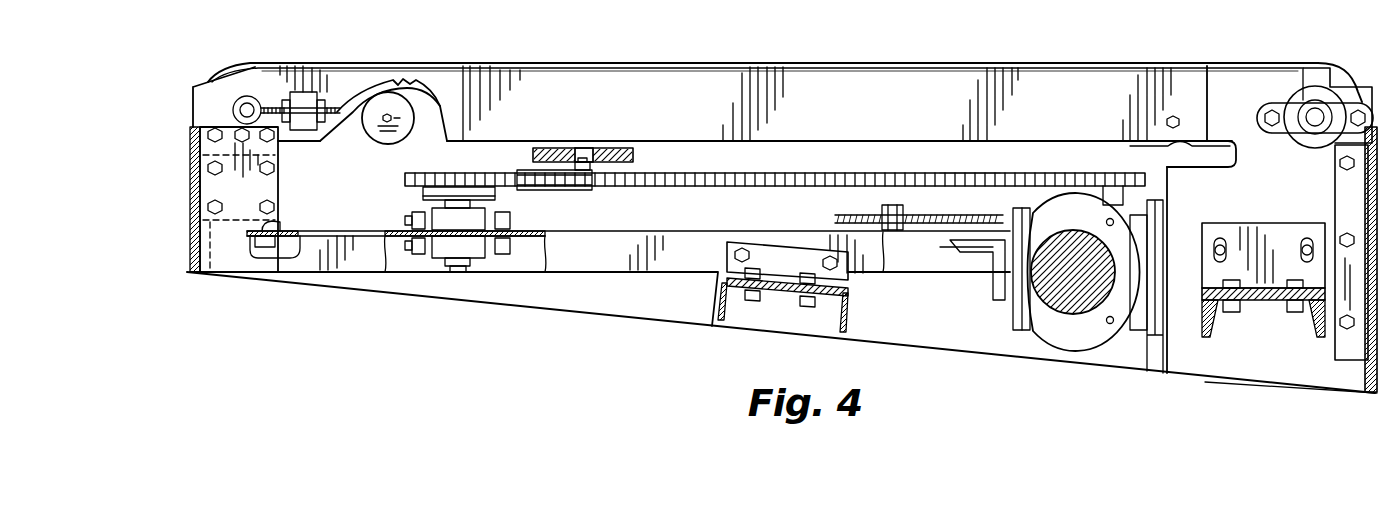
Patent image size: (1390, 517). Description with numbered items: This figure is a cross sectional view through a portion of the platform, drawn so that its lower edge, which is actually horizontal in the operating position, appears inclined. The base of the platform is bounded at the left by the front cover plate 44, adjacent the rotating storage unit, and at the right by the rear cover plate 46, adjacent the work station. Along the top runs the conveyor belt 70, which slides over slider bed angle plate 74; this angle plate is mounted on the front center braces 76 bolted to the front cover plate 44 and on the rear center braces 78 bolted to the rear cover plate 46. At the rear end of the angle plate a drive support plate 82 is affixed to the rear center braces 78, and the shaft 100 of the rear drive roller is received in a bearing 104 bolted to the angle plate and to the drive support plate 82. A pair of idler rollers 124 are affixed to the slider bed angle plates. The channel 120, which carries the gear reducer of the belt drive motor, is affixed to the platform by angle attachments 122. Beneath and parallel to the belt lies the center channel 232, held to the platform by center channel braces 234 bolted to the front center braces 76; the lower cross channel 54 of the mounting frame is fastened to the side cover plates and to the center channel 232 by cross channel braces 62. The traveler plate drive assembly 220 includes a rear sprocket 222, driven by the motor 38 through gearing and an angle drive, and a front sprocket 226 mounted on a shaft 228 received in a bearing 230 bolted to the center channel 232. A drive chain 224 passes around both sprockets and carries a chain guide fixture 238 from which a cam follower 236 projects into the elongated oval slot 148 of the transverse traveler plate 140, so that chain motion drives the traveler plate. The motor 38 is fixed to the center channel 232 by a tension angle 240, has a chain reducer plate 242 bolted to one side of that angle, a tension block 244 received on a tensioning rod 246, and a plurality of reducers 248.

The motor 38 is at (1068, 302).
The front cover plate 44 is at (265, 189).
The rear cover plate 46 is at (1372, 391).
The lower cross channel 54 is at (724, 305).
The cross channel braces 62 is at (840, 277).
The conveyor belt 70 is at (847, 63).
The slider bed angle plate 74 is at (1069, 85).
The front center braces 76 is at (195, 88).
The rear center braces 78 is at (1347, 200).
The drive support plate 82 is at (1357, 93).
The shaft 100 is at (1312, 121).
The bearing 104 is at (1322, 107).
The channel 120 is at (1206, 334).
The angle attachments 122 is at (1296, 267).
The idler rollers 124 is at (397, 106).
The traveler plate 140 is at (615, 148).
The elongated oval slot 148 is at (592, 148).
The traveler plate drive assembly 220 is at (711, 197).
The sprocket 222 is at (1110, 194).
The drive chain 224 is at (956, 177).
The sprocket 226 is at (432, 196).
The shaft 228 is at (470, 208).
The bearing 230 is at (462, 243).
The center channel 232 is at (304, 258).
The center channel braces 234 is at (245, 230).
The cam follower 236 is at (578, 147).
The chain guide fixture 238 is at (562, 192).
The tension angle 240 is at (1002, 248).
The chain reducer plate 242 is at (1013, 328).
The tension block 244 is at (891, 207).
The tensioning rod 246 is at (838, 214).
The reducers 248 is at (1148, 338).